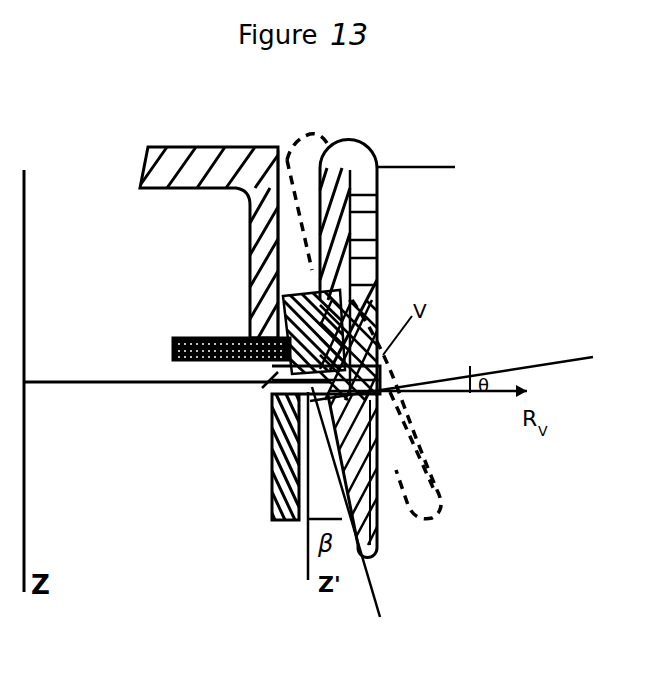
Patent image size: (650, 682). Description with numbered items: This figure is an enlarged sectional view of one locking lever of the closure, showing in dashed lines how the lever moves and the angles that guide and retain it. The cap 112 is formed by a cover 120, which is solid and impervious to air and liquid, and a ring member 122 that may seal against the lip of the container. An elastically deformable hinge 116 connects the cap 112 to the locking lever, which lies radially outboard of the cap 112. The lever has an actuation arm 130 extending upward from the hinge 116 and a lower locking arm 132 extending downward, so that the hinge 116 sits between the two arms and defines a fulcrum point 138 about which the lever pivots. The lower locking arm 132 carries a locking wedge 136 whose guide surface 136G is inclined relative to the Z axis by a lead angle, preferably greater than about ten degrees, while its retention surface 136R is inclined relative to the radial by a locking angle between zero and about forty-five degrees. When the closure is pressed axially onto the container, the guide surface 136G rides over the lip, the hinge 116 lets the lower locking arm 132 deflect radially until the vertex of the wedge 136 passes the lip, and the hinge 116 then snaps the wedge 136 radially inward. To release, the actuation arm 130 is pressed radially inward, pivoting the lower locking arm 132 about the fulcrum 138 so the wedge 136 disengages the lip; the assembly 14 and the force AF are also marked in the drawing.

The cap 112 is at (96, 290).
The cover 120 is at (185, 178).
The ring member 122 is at (253, 337).
The deformable hinge 116 is at (290, 258).
The fulcrum point 138 is at (288, 300).
The fastener assembly 14 is at (488, 256).
The actuation arm 130 is at (380, 250).
The lower locking arm 132 is at (380, 390).
The axial force AF is at (431, 177).
The locking wedge 136 is at (276, 486).
The retention surface 136R is at (262, 388).
The guide surface 136G is at (388, 482).